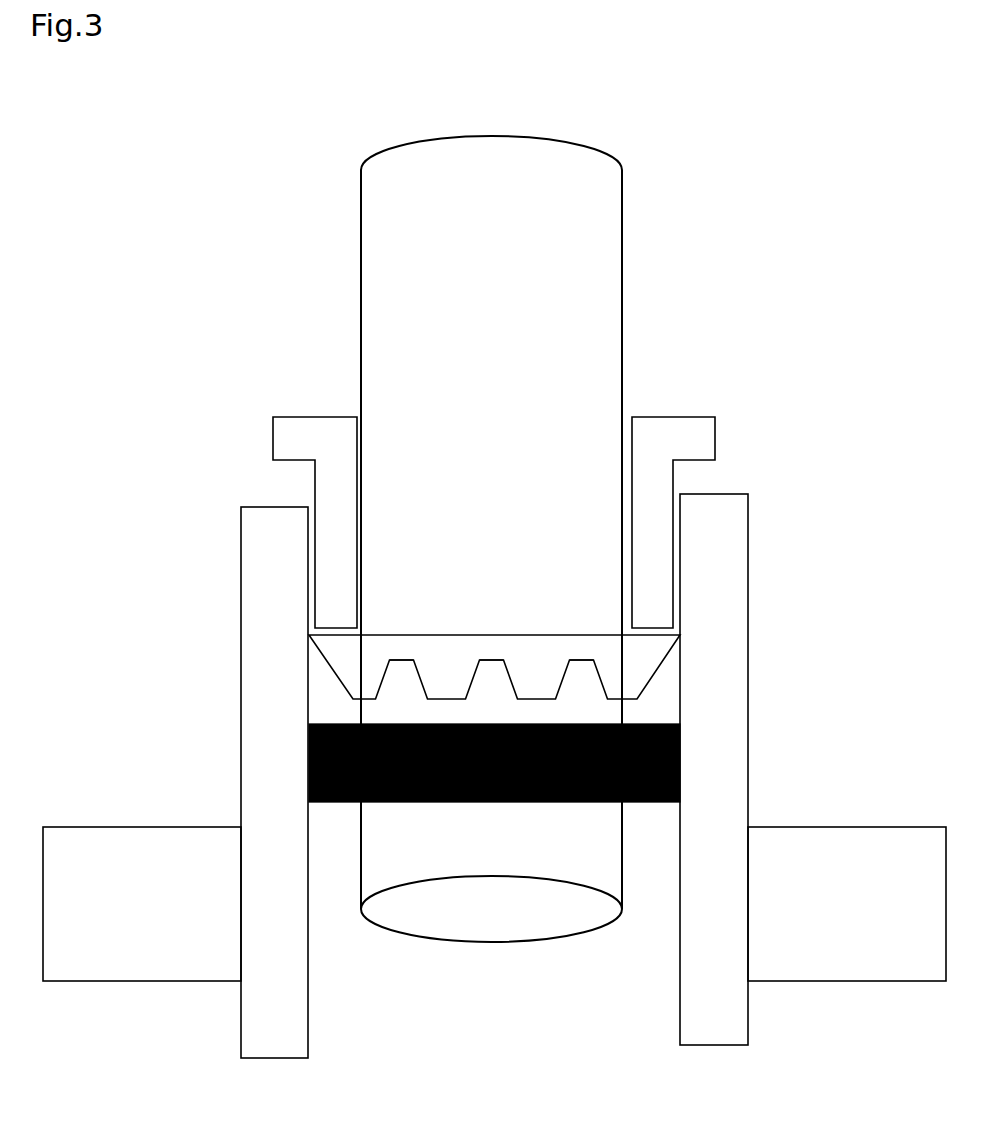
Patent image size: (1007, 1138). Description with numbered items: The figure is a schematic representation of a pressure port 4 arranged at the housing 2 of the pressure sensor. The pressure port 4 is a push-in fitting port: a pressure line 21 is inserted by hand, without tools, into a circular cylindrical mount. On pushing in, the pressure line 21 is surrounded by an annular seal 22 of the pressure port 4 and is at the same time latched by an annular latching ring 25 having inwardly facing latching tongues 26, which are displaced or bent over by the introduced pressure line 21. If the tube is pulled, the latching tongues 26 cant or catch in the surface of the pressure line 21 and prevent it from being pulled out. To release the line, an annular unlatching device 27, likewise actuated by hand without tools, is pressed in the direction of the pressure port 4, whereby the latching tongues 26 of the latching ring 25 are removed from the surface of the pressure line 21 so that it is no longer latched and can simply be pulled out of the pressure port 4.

The housing 2 is at (80, 827).
The pressure port 4 is at (262, 507).
The pressure line 21 is at (622, 312).
The seal 22 is at (452, 803).
The latching ring 25 is at (437, 635).
The latching tongues 26 is at (446, 699).
The unlatching device 27 is at (305, 417).